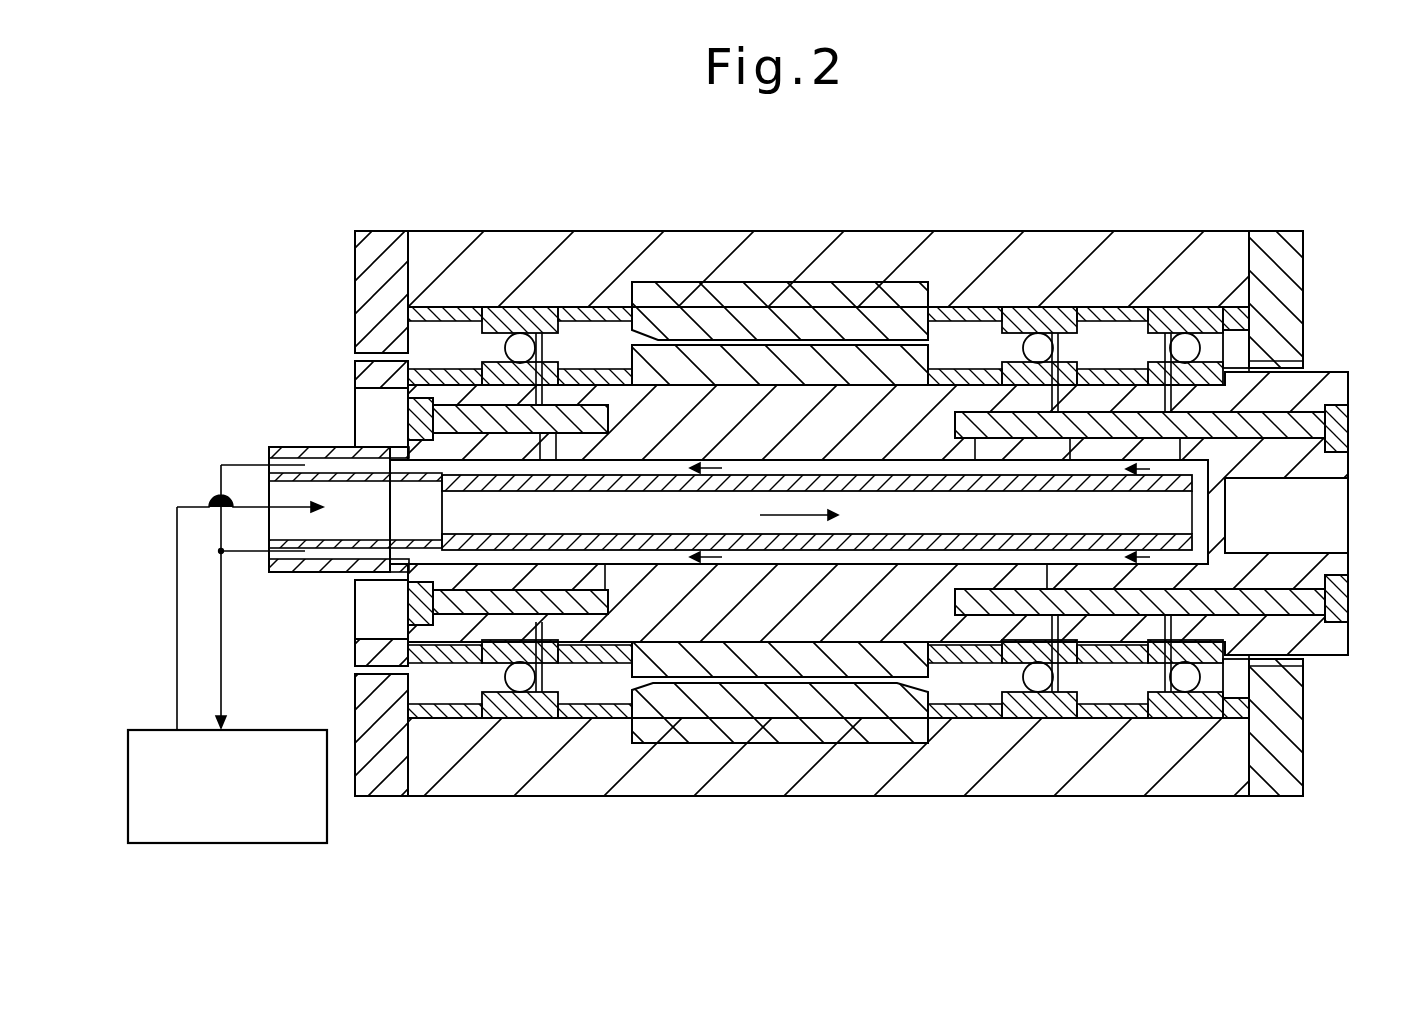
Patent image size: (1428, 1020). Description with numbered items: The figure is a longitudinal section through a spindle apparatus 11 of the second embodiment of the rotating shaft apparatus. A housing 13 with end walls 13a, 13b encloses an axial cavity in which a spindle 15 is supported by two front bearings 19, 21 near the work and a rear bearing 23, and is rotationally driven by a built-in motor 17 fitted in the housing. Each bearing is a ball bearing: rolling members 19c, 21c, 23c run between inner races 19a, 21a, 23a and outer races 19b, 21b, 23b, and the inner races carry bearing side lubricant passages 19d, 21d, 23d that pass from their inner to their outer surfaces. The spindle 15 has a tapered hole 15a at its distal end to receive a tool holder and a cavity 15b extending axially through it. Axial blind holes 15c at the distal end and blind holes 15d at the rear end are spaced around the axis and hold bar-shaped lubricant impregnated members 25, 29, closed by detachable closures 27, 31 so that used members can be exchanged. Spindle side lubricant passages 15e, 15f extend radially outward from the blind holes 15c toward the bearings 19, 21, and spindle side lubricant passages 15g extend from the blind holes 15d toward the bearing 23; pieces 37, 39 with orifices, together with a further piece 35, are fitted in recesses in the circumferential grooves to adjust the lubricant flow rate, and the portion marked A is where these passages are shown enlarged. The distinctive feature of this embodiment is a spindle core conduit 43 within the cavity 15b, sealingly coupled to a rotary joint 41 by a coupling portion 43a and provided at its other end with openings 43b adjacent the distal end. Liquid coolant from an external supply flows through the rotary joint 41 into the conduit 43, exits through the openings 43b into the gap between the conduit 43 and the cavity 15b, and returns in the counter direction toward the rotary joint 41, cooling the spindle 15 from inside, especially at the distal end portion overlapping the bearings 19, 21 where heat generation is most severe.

The spindle apparatus 11 is at (1122, 185).
The housing 13 is at (860, 486).
The right end wall of housing 13a is at (1286, 273).
The left end wall of housing 13b is at (374, 236).
The spindle 15 is at (874, 434).
The tapered hole 15a is at (1240, 458).
The cavity 15b is at (392, 538).
The blind holes 15c is at (976, 436).
The blind holes 15d is at (540, 400).
The spindle side lubricant passage 15e is at (1180, 440).
The spindle side lubricant passage 15f is at (1070, 440).
The spindle side lubricant passage 15g is at (556, 430).
The built-in motor 17 is at (774, 262).
The front bearing 19 is at (1247, 454).
The inner race 19a is at (1240, 380).
The outer race 19b is at (1243, 331).
The rolling members 19c is at (1246, 361).
The bearing side lubricant passage 19d is at (1154, 305).
The front bearing 21 is at (1035, 454).
The inner race 21a is at (1072, 356).
The outer race 21b is at (1010, 305).
The rolling members 21c is at (1020, 354).
The bearing side lubricant passage 21d is at (1076, 305).
The rear bearing 23 is at (520, 452).
The inner race 23a is at (558, 356).
The outer race 23b is at (493, 306).
The rolling members 23c is at (505, 352).
The bearing side lubricant passage 23d is at (552, 305).
The lubricant impregnated member 25 is at (1250, 433).
The closure 27 is at (1343, 422).
The lubricant impregnated member 29 is at (462, 420).
The closure 31 is at (402, 411).
The piston 35 is at (1158, 395).
The piece 37 is at (1035, 395).
The piece 39 is at (528, 388).
The rotary joint 41 is at (275, 497).
The spindle core conduit 43 is at (843, 512).
The coupling portion 43a is at (737, 527).
The openings 43b is at (1218, 557).
The portion A is at (1255, 396).